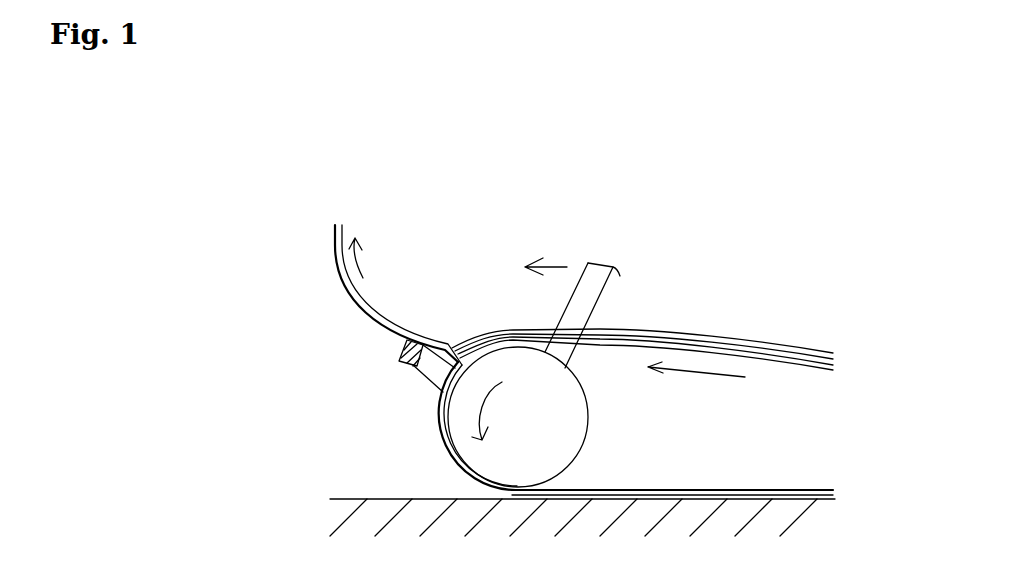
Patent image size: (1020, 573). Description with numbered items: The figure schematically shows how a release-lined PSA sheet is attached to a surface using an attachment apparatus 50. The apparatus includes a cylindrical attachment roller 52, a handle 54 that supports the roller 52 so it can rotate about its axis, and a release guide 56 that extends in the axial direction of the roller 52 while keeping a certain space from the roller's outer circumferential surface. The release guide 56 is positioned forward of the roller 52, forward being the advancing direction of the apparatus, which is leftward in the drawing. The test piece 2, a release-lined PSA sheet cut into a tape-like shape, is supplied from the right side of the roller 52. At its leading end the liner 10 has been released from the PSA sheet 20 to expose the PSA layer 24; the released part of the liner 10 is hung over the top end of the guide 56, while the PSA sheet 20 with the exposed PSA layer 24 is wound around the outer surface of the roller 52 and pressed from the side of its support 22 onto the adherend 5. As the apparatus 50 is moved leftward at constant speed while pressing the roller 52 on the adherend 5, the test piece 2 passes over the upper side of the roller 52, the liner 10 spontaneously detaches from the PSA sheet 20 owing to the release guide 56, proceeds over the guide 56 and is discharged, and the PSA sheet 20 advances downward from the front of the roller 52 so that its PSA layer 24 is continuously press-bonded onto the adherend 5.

The release-lined PSA sheet 2 is at (815, 307).
The adherend 5 is at (780, 518).
The release liner 10 is at (334, 252).
The PSA sheet 20 is at (728, 482).
The support 22 is at (792, 493).
The PSA layer 24 is at (440, 445).
The attachment apparatus 50 is at (700, 220).
The attachment roller 52 is at (565, 413).
The handle 54 is at (595, 300).
The release guide 56 is at (406, 366).